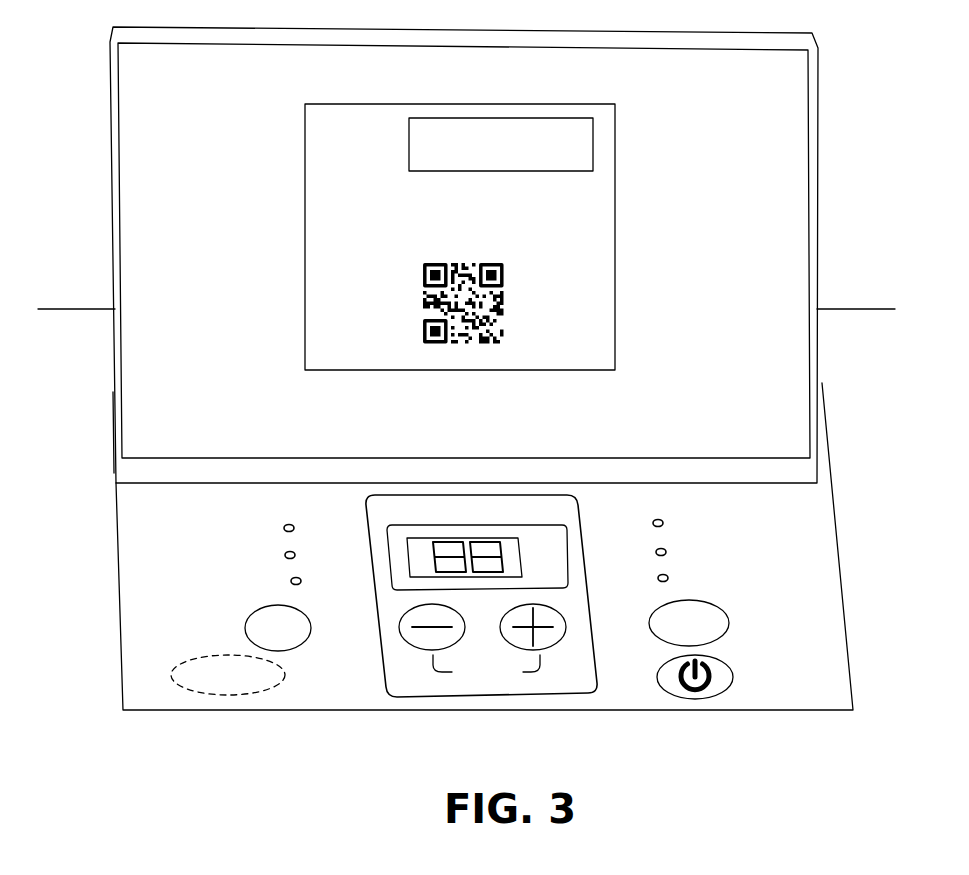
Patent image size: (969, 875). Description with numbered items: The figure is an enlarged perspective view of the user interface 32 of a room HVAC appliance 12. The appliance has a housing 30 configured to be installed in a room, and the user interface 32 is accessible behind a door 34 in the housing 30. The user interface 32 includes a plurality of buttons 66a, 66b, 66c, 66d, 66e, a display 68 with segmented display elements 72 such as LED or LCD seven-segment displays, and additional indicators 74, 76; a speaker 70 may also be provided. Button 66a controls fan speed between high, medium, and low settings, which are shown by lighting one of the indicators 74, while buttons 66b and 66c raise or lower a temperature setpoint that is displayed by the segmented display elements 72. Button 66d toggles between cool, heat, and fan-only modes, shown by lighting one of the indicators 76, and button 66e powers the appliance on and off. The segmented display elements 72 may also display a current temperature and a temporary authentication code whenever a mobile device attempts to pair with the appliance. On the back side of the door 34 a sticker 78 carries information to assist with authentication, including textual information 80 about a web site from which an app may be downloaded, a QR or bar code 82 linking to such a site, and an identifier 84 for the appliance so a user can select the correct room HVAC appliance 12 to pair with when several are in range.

The room HVAC appliance 12 is at (434, 363).
The housing 30 is at (848, 318).
The user interface 32 is at (118, 542).
The door 34 is at (108, 72).
The button 66a is at (245, 637).
The button 66b is at (410, 640).
The button 66c is at (568, 627).
The button 66d is at (728, 630).
The button 66e is at (733, 683).
The display 68 is at (476, 595).
The speaker 70 is at (172, 672).
The segmented display elements 72 is at (498, 540).
The indicators 74 is at (289, 522).
The indicators 76 is at (656, 517).
The sticker 78 is at (305, 242).
The textual information 80 is at (400, 185).
The QR or bar code 82 is at (412, 333).
The identifier 84 is at (596, 161).